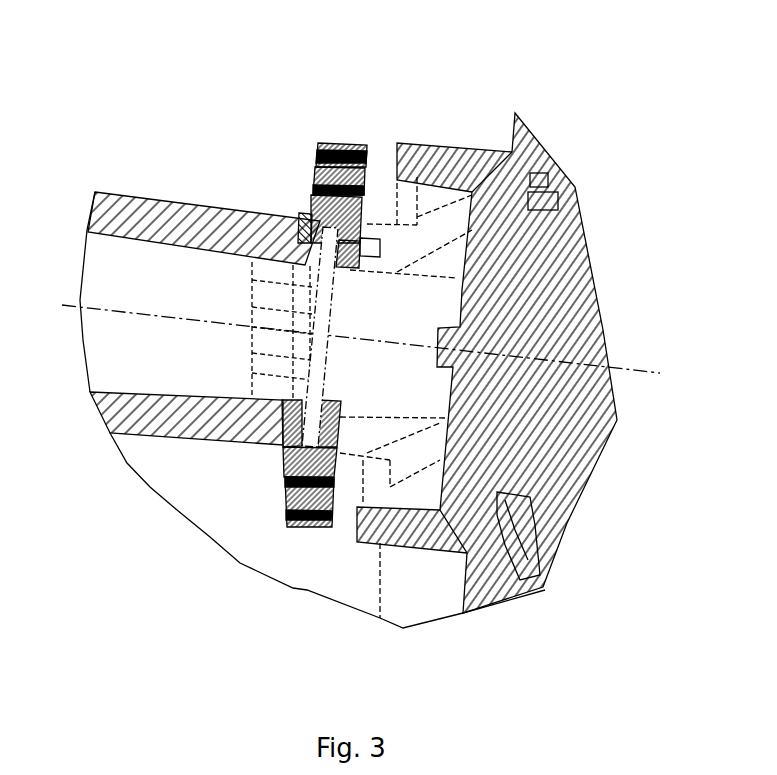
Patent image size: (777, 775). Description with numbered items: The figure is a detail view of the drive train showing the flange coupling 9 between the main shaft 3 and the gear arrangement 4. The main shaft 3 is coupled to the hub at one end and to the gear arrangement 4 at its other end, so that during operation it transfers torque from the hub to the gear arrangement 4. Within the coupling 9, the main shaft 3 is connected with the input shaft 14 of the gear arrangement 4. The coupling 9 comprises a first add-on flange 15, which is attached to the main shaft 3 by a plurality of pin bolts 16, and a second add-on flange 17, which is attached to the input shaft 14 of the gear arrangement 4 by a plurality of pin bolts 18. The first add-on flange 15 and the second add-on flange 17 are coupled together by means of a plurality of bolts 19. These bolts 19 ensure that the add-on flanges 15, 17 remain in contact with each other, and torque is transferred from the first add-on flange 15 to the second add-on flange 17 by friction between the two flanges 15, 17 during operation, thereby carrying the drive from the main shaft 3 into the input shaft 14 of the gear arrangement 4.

The main shaft 3 is at (167, 218).
The gear arrangement 4 is at (558, 295).
The flange coupling 9 is at (350, 83).
The input shaft 14 is at (437, 193).
The first add-on flange 15 is at (291, 438).
The pin bolts 16 is at (303, 240).
The second add-on flange 17 is at (327, 435).
The pin bolts 18 is at (360, 240).
The bolts 19 is at (312, 178).